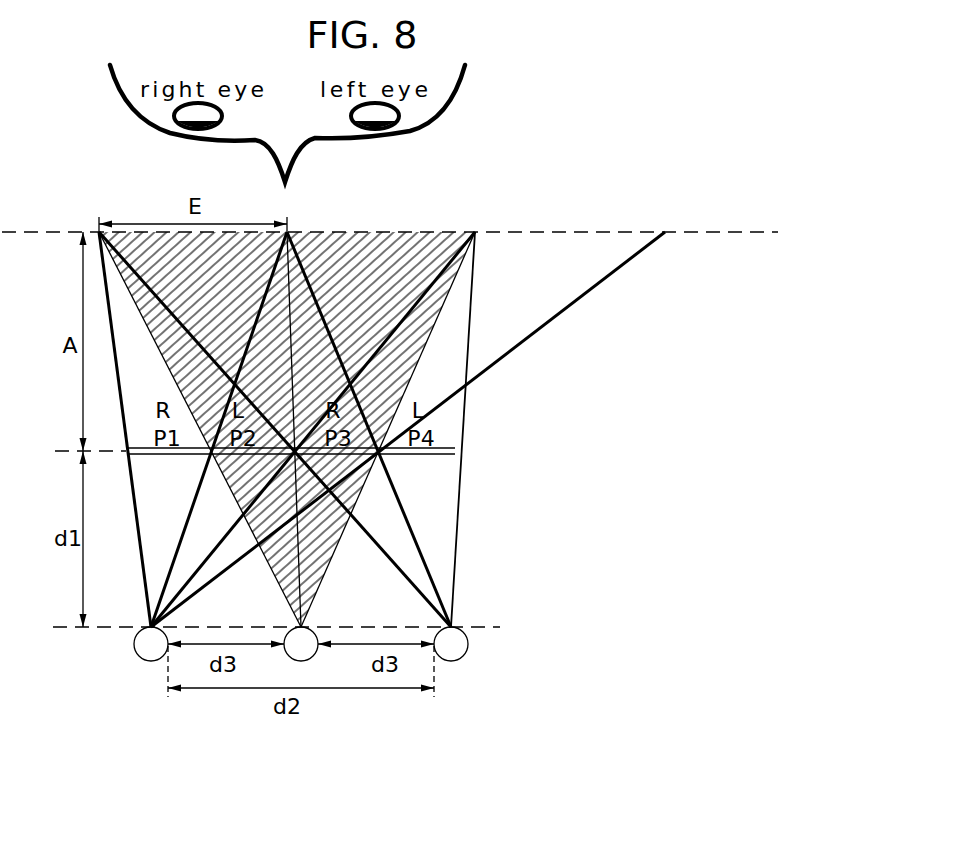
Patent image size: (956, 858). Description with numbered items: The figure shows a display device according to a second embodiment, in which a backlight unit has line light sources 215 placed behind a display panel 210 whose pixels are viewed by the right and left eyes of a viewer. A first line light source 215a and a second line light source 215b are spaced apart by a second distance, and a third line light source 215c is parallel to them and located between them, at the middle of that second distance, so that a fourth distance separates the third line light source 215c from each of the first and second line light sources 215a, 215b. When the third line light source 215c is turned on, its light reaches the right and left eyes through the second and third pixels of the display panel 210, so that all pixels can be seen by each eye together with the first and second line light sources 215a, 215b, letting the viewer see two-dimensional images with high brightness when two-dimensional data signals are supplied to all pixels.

The display panel 210 is at (455, 448).
The line light sources 215 is at (316, 711).
The first line light source 215a is at (152, 652).
The second line light source 215b is at (474, 683).
The third line light source 215c is at (303, 652).